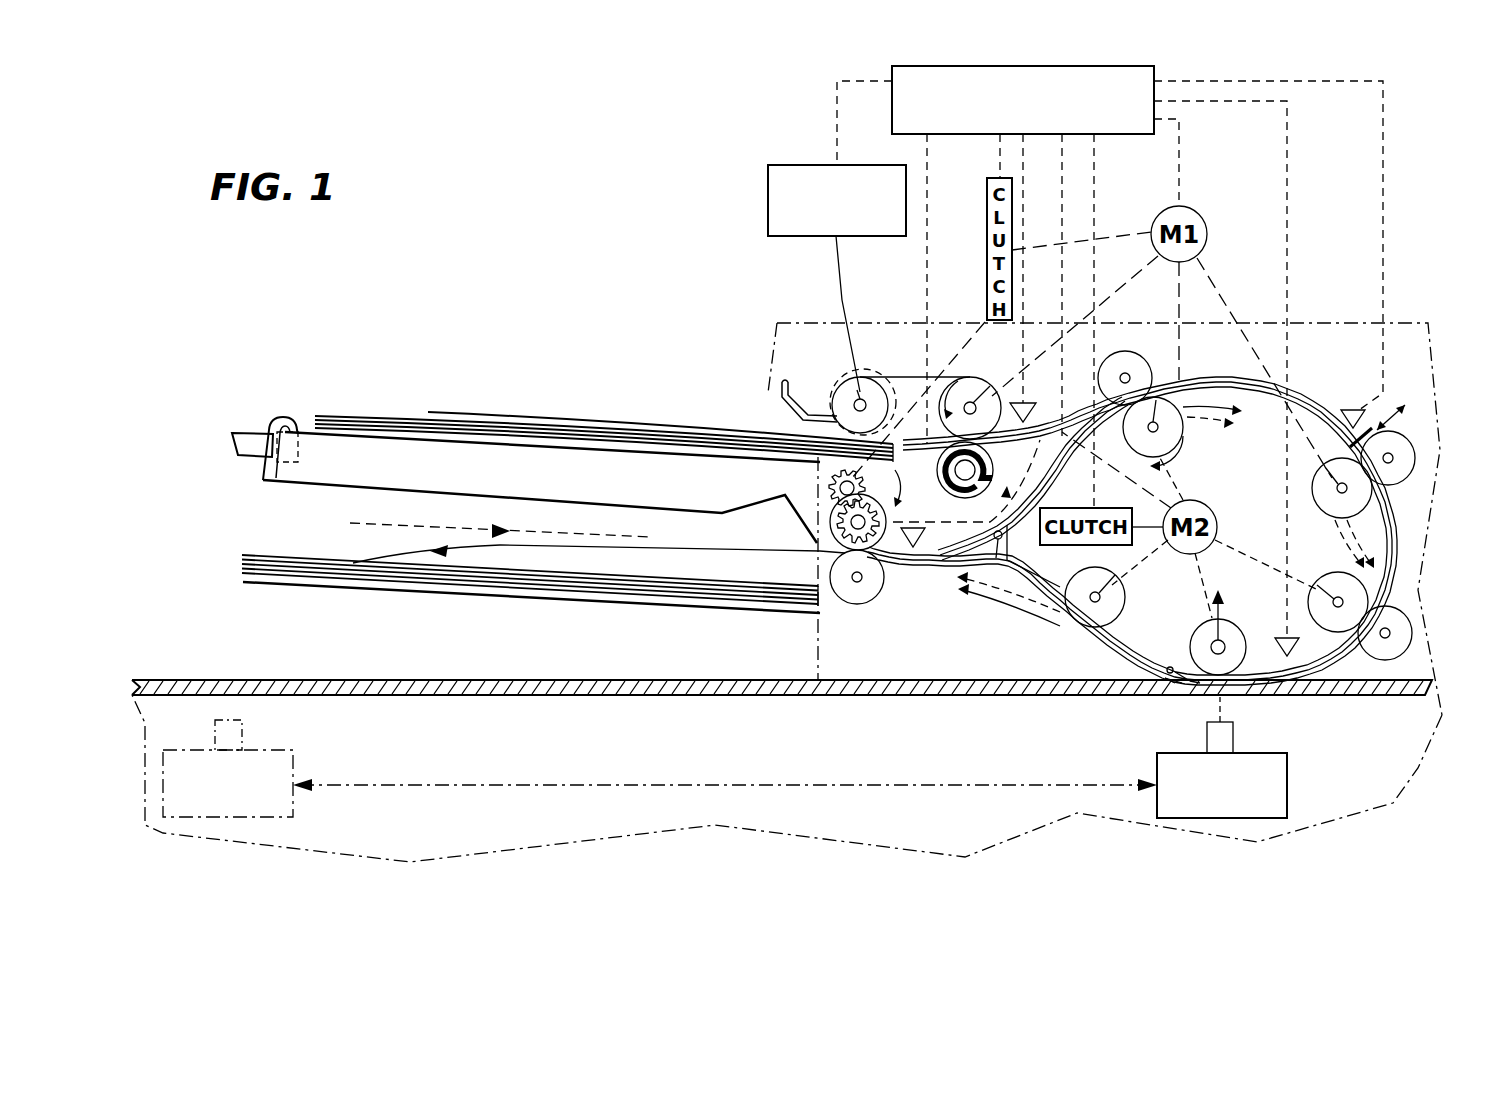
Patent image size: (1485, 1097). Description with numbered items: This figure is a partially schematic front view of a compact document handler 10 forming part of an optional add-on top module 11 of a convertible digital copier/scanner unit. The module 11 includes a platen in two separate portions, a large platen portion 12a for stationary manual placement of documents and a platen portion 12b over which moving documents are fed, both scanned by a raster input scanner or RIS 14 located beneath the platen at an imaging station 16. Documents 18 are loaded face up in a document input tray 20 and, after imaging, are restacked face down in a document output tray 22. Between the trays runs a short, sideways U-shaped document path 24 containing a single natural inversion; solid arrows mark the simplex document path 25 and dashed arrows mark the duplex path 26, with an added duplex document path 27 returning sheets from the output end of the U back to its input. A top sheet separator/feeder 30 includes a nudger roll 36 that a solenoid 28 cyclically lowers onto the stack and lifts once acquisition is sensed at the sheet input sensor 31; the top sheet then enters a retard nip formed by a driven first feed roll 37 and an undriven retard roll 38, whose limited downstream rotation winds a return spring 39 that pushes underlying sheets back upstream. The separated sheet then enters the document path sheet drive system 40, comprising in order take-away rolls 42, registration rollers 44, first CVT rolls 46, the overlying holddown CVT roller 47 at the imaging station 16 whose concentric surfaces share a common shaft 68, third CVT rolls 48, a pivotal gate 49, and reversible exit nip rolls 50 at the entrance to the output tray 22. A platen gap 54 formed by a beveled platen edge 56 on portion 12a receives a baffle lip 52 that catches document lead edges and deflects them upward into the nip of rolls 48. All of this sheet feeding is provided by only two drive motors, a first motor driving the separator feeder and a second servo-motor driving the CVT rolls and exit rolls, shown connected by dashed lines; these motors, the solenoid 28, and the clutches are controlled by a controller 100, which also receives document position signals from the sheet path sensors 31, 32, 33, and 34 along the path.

The document handler 10 is at (588, 184).
The top module 11 is at (1121, 834).
The platen portion 12a is at (540, 697).
The platen portion 12b is at (1313, 697).
The raster input scanner (RIS) 14 is at (1272, 785).
The imaging station 16 is at (1253, 703).
The documents 18 is at (527, 426).
The document input tray 20 is at (370, 436).
The document output tray 22 is at (420, 590).
The U-shaped document path 24 is at (1399, 565).
The simplex document path 25 is at (535, 548).
The duplex path 26 is at (443, 527).
The duplex document path 27 is at (1040, 468).
The solenoid 28 is at (768, 200).
The top sheet separator/feeder 30 is at (868, 341).
The sensor 31 is at (1030, 410).
The sensor 32 is at (1345, 420).
The sensor 33 is at (1278, 650).
The sensor 34 is at (923, 548).
The nudger roll 36 is at (837, 395).
The first feed roll 37 is at (990, 384).
The retard roll 38 is at (1005, 470).
The return spring 39 is at (950, 483).
The document path sheet drive system 40 is at (1372, 341).
The take-away rolls 42 is at (1173, 447).
The registration rollers 44 is at (1323, 497).
The first CVT rolls 46 is at (1335, 587).
The CVT roller 47 is at (1225, 608).
The third CVT rolls 48 is at (1100, 583).
The pivotal gate 49 is at (1002, 541).
The reversible exit nip rolls 50 is at (827, 508).
The baffle lip 52 is at (1194, 697).
The platen gap 54 is at (1168, 665).
The beveled platen edge 56 is at (1152, 697).
The shaft 68 is at (1213, 641).
The controller 100 is at (1060, 66).